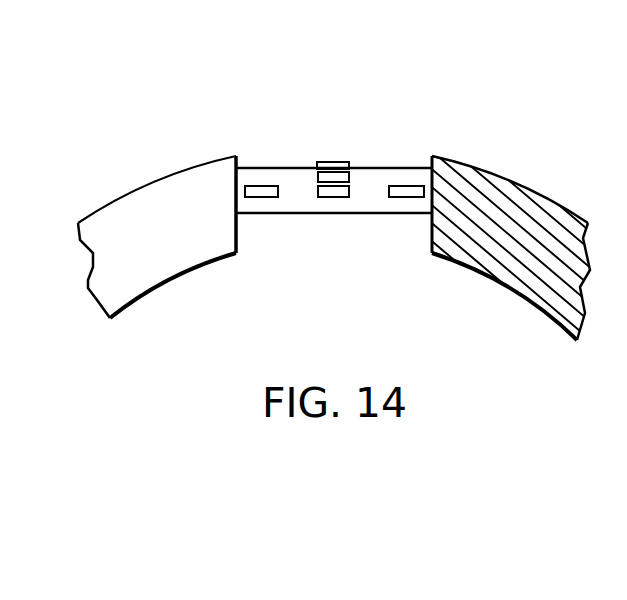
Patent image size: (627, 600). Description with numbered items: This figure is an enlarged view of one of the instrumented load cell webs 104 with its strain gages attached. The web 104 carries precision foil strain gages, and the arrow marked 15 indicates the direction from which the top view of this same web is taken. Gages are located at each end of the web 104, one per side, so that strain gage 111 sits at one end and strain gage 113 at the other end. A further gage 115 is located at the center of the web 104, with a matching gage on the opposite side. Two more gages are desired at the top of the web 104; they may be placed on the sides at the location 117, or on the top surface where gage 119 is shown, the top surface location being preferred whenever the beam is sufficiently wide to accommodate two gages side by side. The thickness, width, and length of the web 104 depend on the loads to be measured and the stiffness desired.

The section view indicator for FIG. 15 is at (335, 100).
The web 104 is at (263, 168).
The strain gage 111 is at (270, 198).
The strain gage 113 is at (408, 198).
The strain gage 115 is at (337, 198).
The strain gage location 117 is at (352, 177).
The strain gage 119 is at (325, 162).